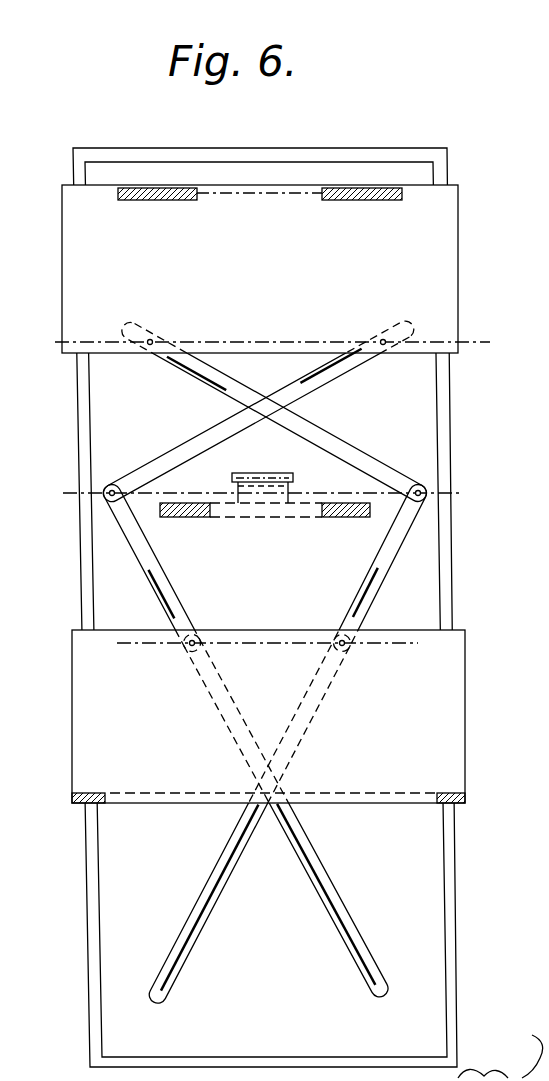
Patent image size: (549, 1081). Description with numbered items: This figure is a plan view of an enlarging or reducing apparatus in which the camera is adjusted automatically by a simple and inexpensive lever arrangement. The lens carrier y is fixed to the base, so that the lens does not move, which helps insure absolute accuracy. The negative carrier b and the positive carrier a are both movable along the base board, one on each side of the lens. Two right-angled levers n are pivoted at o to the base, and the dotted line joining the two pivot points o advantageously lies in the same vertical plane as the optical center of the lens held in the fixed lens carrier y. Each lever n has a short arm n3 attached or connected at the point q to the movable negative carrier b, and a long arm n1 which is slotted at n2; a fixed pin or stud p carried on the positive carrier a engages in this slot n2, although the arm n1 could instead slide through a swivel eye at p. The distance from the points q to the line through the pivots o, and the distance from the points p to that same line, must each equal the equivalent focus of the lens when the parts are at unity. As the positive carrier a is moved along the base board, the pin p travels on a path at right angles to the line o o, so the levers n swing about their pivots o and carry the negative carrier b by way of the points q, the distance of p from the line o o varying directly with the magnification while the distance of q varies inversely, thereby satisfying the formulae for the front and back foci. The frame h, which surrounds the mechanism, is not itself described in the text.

The frame h is at (172, 143).
The negative carrier b is at (272, 269).
The positive carrier a is at (268, 716).
The point of attachment q is at (152, 342).
The short arm of lever n3 is at (362, 428).
The pivot point o is at (110, 493).
The right-angled lever n is at (142, 552).
The slot n2 is at (173, 598).
The lens carrier y is at (260, 507).
The fixed pin or stud p is at (191, 646).
The long arm of lever n1 is at (200, 925).